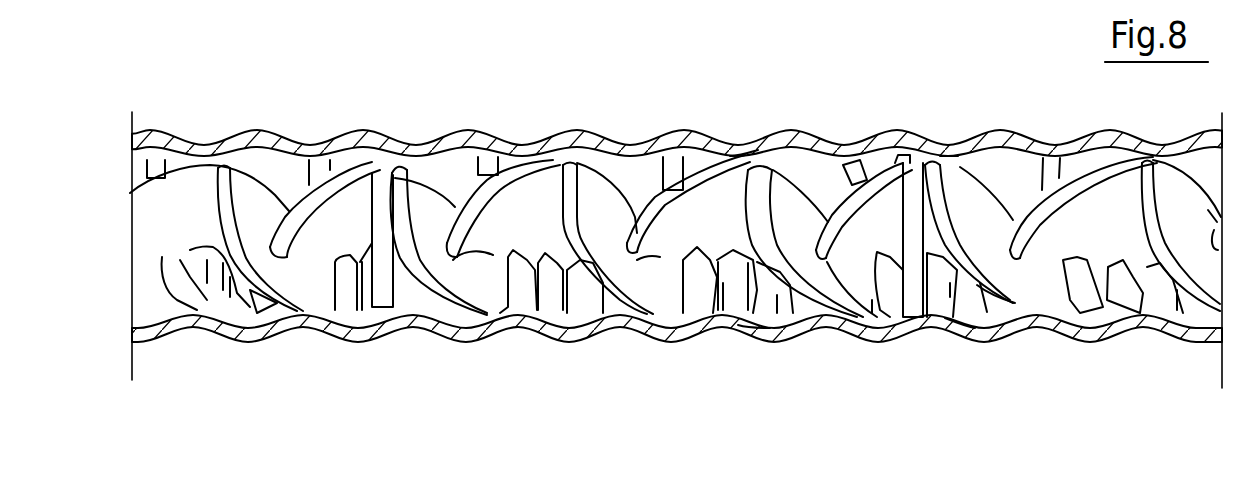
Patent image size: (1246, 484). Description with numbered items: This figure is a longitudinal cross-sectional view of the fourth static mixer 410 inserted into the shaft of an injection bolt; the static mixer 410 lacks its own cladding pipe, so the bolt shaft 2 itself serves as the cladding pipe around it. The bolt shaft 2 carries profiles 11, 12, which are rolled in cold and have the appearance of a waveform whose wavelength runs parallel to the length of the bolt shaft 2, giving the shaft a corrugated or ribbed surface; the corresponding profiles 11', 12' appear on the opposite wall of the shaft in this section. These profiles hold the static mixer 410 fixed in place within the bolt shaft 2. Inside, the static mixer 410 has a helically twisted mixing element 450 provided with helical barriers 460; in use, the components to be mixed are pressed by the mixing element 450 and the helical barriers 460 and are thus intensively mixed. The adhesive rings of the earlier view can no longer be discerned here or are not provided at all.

The bolt shaft 2 is at (175, 328).
The profile 11 is at (947, 98).
The wall section 11' is at (962, 369).
The profile 12 is at (744, 98).
The wall section 12' is at (748, 372).
The static mixer 410 is at (648, 240).
The helically twisted mixing element 450 is at (343, 172).
The helical barriers 460 is at (558, 305).